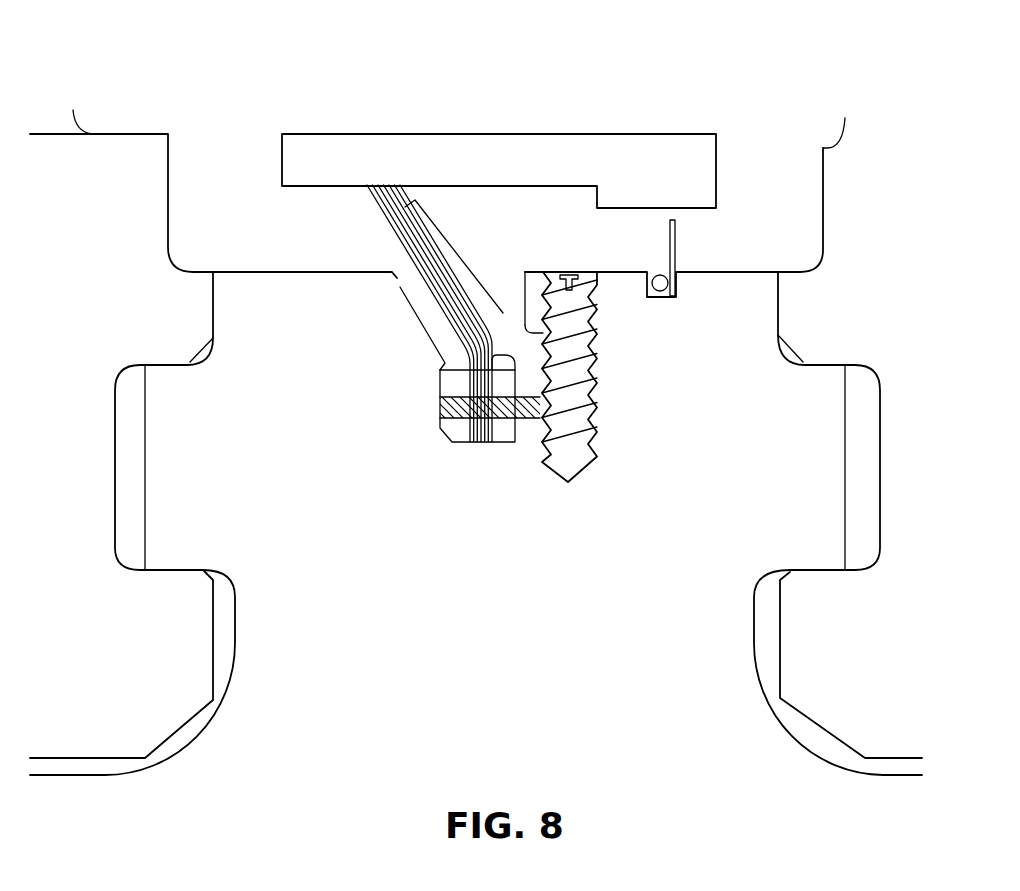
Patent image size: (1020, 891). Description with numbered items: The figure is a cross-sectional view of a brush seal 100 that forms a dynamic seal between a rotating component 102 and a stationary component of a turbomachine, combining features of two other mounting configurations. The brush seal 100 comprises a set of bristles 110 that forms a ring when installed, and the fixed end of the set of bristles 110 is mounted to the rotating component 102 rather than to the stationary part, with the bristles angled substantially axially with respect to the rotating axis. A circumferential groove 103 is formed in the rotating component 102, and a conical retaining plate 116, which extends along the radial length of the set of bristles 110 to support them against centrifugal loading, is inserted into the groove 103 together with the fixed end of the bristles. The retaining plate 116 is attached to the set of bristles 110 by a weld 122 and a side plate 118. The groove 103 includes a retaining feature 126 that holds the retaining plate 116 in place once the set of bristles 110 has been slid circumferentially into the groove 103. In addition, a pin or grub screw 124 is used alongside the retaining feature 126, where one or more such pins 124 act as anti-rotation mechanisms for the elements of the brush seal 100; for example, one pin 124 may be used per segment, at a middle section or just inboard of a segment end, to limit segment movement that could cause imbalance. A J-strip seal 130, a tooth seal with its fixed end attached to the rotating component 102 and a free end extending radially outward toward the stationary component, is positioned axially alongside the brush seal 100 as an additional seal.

The brush seal 100 is at (189, 92).
The rotating component 102 is at (198, 407).
The circumferential groove 103 is at (503, 277).
The set of bristles 110 is at (400, 278).
The conical retaining plate 116 is at (498, 323).
The side plate 118 is at (453, 386).
The weld 122 is at (526, 422).
The pin or grub screw 124 is at (583, 467).
The retaining feature 126 is at (532, 292).
The J-strip seal 130 is at (692, 248).